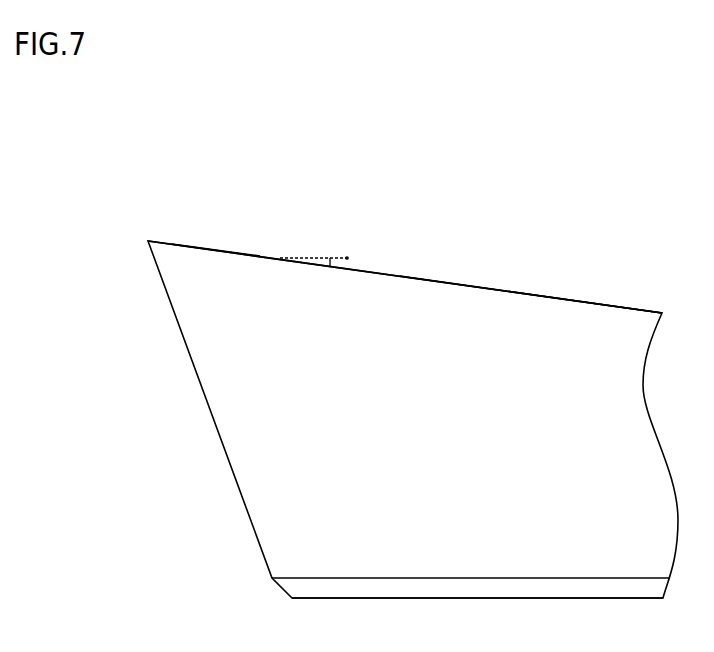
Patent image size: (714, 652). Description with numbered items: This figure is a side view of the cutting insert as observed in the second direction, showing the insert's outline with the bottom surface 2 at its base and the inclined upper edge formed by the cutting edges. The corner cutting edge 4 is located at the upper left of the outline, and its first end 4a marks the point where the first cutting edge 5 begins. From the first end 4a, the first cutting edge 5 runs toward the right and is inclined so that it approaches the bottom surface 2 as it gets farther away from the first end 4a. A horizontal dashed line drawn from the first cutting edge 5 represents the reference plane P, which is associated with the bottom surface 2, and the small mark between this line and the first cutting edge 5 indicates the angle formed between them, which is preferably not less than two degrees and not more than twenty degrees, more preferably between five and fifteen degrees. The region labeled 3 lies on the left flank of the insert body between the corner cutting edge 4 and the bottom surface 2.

The bottom surface 2 is at (323, 600).
The body 3 is at (218, 353).
The corner cutting edge 4 is at (172, 240).
The first end 4a is at (212, 248).
The first cutting edge 5 is at (477, 283).
The reference plane P is at (347, 257).